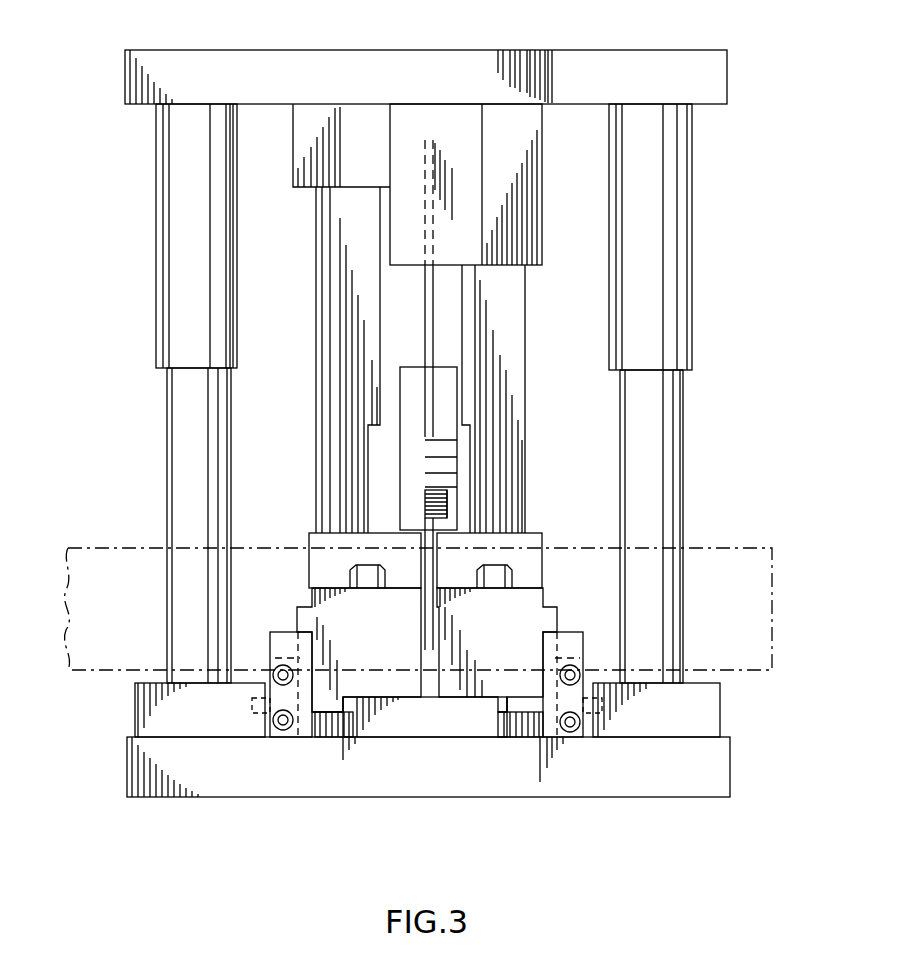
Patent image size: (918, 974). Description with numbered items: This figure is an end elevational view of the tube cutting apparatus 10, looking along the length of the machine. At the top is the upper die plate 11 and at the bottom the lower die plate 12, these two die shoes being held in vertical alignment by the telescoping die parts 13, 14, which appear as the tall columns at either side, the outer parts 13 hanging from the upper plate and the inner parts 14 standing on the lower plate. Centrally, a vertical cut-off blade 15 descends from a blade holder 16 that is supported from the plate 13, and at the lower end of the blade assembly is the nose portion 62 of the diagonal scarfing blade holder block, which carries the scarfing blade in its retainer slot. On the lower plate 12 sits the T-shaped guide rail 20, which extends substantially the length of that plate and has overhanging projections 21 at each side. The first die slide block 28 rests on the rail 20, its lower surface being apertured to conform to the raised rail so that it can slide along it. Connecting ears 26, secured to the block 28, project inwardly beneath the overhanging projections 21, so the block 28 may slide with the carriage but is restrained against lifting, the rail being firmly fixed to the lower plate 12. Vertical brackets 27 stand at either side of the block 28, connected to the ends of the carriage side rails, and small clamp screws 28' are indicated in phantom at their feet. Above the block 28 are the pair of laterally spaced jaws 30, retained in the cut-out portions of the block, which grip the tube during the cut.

The tube cutting apparatus 10 is at (618, 806).
The upper die plate 11 is at (700, 74).
The lower die plate 12 is at (695, 778).
The telescoping die part 13 is at (188, 280).
The telescoping die part 14 is at (190, 508).
The vertical cut-off blade 15 is at (433, 313).
The blade holder 16 is at (527, 192).
The T-shaped rail 20 is at (428, 745).
The overhanging projections 21 is at (357, 700).
The connecting ears 26 is at (338, 745).
The vertical brackets 27 is at (282, 643).
The first die slide block 28 is at (445, 636).
The clamp screw 28' is at (423, 741).
The jaws 30 is at (314, 535).
The nose portion 62 is at (447, 400).